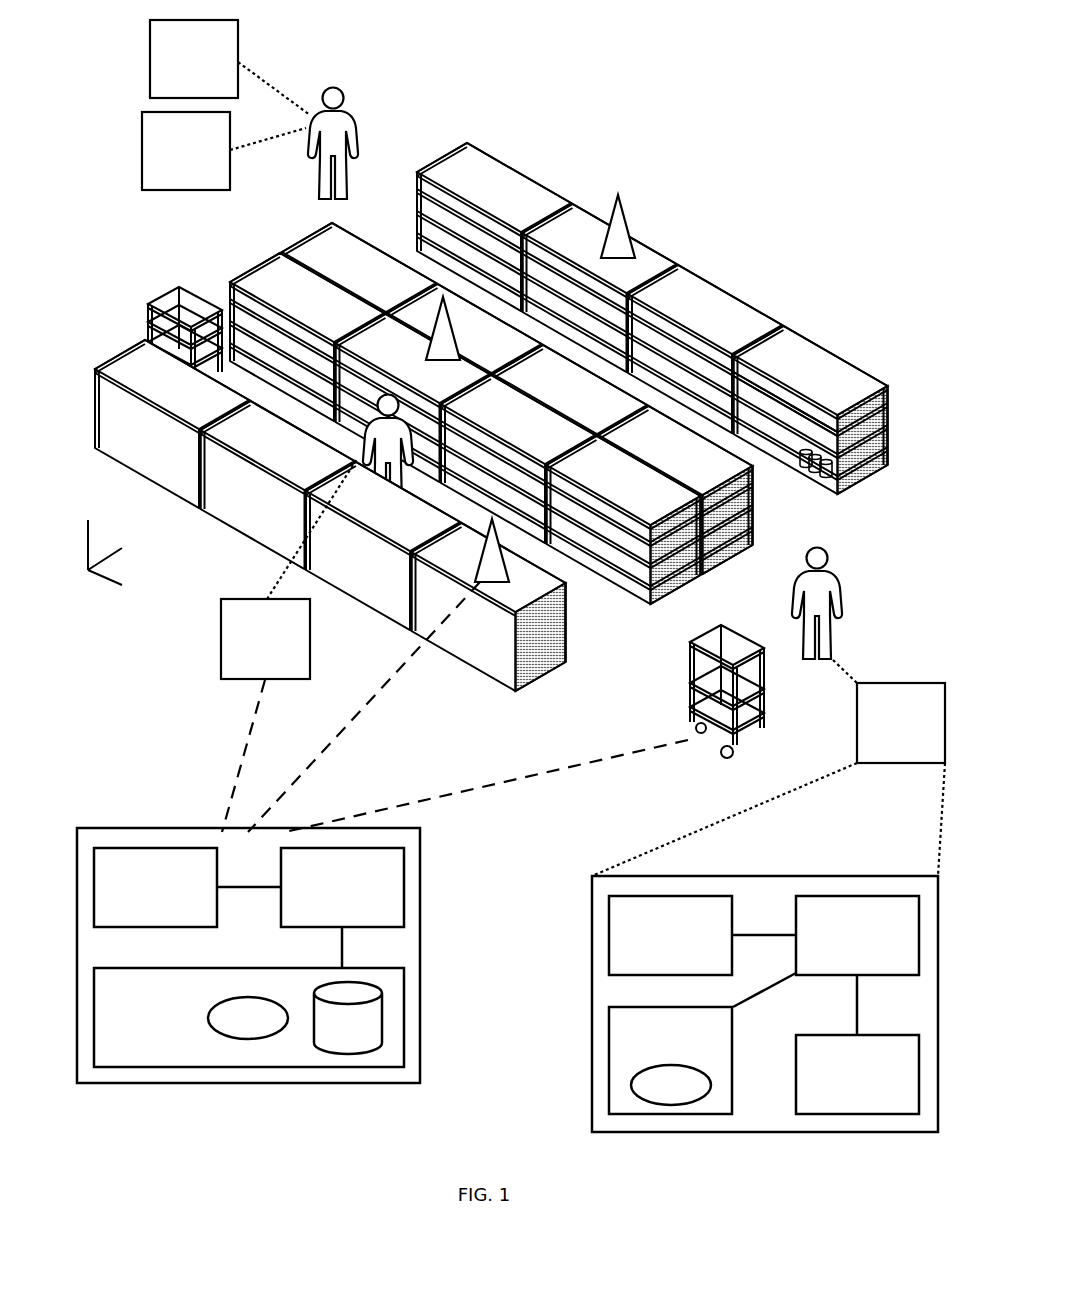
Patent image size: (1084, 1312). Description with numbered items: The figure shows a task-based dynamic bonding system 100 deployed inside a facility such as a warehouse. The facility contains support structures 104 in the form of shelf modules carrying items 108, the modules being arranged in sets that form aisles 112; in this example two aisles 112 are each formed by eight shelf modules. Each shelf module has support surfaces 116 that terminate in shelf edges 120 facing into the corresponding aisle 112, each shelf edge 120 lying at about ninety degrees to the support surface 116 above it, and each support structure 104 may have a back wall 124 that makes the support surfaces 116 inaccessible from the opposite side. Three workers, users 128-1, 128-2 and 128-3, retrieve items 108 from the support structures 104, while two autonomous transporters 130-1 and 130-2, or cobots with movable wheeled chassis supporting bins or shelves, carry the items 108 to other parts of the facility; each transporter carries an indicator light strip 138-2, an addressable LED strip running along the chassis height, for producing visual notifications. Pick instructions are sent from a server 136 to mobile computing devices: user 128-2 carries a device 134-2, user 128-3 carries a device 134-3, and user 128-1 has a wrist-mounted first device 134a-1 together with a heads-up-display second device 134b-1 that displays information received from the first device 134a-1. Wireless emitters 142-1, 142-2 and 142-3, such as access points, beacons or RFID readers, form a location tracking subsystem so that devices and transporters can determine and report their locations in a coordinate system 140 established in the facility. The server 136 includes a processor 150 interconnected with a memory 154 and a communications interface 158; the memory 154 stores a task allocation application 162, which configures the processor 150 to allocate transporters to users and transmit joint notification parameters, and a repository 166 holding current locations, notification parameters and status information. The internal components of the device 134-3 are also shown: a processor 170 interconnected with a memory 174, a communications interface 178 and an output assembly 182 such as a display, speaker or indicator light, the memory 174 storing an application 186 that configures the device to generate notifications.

The task-based dynamic bonding system 100 is at (777, 235).
The support structures 104 is at (874, 428).
The items 108 is at (822, 482).
The aisles 112 is at (582, 612).
The support surfaces 116 is at (764, 386).
The shelf edges 120 is at (802, 404).
The back wall 124 is at (385, 600).
The user 128-1 is at (357, 118).
The user 128-2 is at (363, 424).
The user 128-3 is at (838, 606).
The transporter 130-1 is at (178, 283).
The transporter 130-2 is at (702, 745).
The first device 134a-1 is at (230, 67).
The second device 134b-1 is at (224, 151).
The device 134-2 is at (289, 569).
The device 134-3 is at (768, 768).
The server 136 is at (428, 946).
The indicator light strip 138-2 is at (148, 311).
The coordinate system 140 is at (82, 580).
The wireless emitter 142-1 is at (618, 195).
The wireless emitter 142-2 is at (443, 297).
The wireless emitter 142-3 is at (490, 582).
The processor 150 is at (342, 908).
The memory 154 is at (249, 1017).
The communications interface 158 is at (187, 887).
The task allocation application 162 is at (248, 1018).
The repository 166 is at (348, 1018).
The processor 170 is at (826, 965).
The memory 174 is at (670, 1060).
The communications interface 178 is at (702, 935).
The output assembly 182 is at (857, 1074).
The application 186 is at (671, 1085).